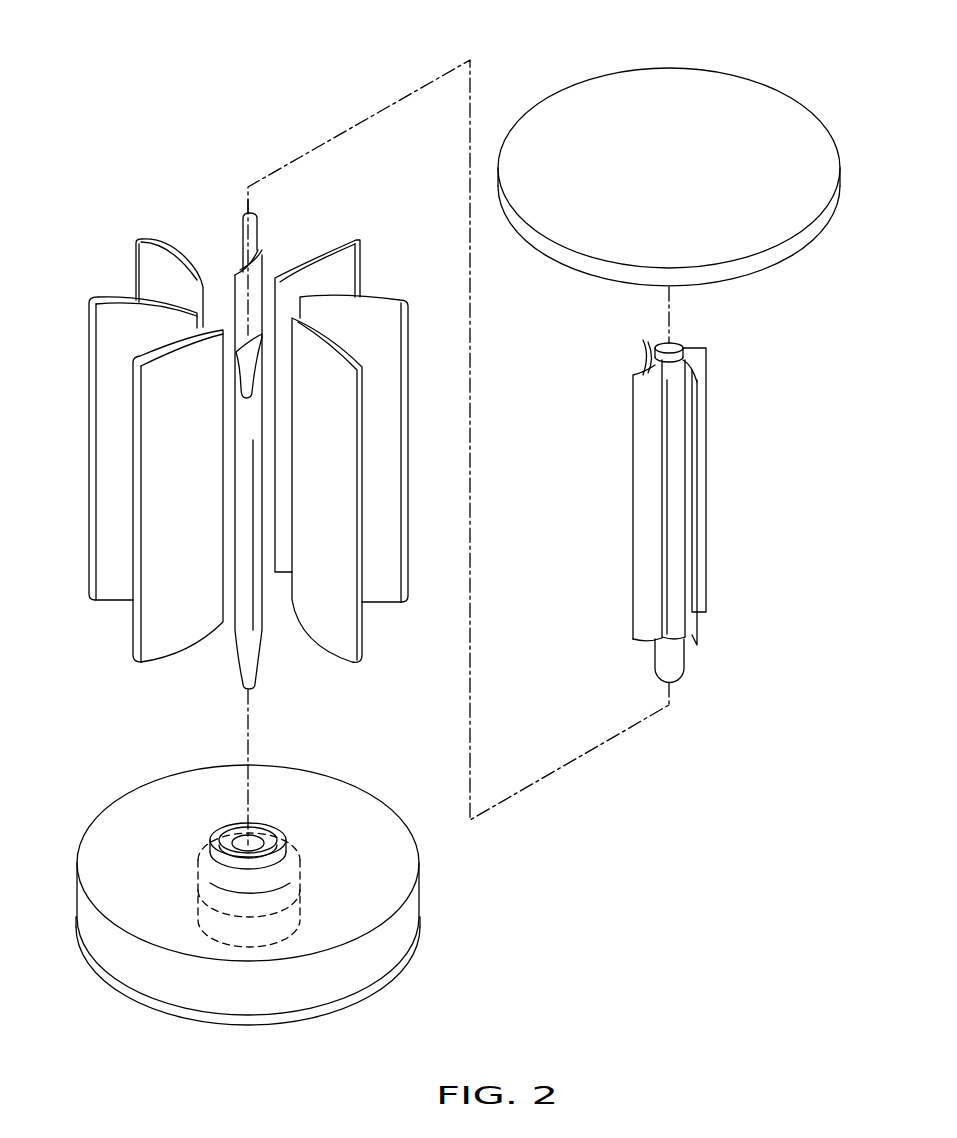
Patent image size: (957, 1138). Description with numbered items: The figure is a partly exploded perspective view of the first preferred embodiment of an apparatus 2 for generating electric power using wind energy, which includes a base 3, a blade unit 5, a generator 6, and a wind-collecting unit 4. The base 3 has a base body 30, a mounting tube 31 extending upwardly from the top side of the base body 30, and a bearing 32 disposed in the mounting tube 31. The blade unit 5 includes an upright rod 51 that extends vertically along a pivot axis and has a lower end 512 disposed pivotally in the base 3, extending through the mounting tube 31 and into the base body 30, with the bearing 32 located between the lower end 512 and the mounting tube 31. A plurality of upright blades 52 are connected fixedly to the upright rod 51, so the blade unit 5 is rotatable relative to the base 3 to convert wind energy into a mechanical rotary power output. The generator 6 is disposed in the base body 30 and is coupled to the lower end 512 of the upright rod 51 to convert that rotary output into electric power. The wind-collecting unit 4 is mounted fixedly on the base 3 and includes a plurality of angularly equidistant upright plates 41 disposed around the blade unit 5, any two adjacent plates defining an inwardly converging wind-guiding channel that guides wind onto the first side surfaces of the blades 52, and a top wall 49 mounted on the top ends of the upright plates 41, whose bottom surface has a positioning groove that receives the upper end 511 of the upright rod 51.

The apparatus for generating electric power using wind energy 2 is at (230, 128).
The base 3 is at (80, 832).
The base body 30 is at (127, 812).
The mounting tube 31 is at (220, 835).
The bearing 32 is at (268, 838).
The wind-collecting unit 4 is at (138, 200).
The upright plates 41 is at (242, 222).
The top wall 49 is at (588, 91).
The blade unit 5 is at (717, 550).
The upright rod 51 is at (672, 498).
The upper end 511 is at (677, 347).
The lower end 512 is at (680, 665).
The upright blades 52 is at (640, 423).
The generator 6 is at (247, 948).